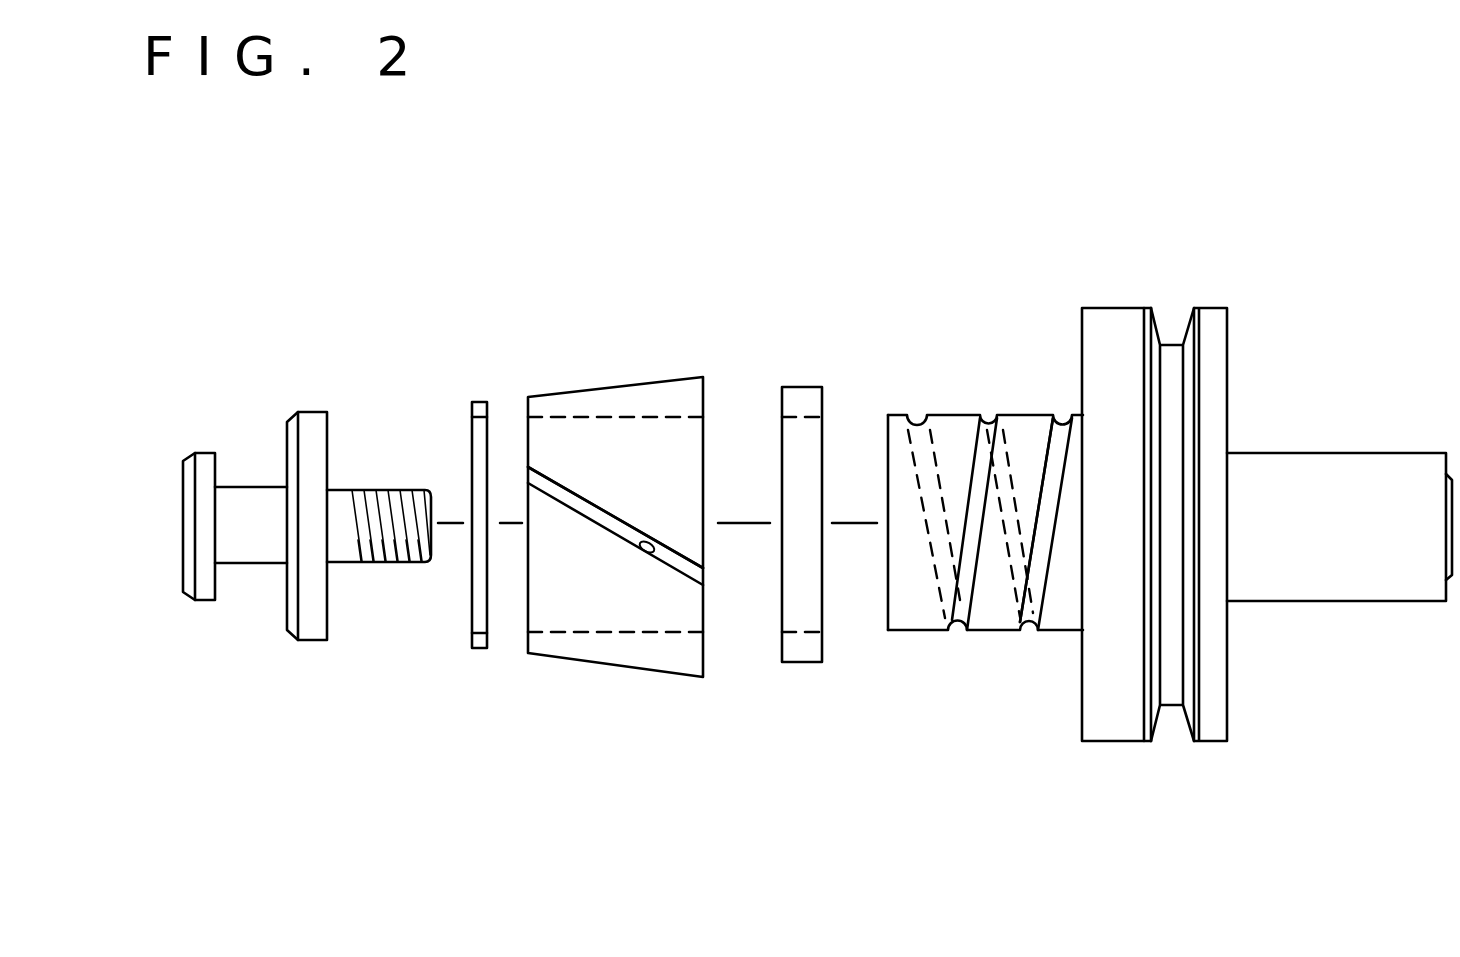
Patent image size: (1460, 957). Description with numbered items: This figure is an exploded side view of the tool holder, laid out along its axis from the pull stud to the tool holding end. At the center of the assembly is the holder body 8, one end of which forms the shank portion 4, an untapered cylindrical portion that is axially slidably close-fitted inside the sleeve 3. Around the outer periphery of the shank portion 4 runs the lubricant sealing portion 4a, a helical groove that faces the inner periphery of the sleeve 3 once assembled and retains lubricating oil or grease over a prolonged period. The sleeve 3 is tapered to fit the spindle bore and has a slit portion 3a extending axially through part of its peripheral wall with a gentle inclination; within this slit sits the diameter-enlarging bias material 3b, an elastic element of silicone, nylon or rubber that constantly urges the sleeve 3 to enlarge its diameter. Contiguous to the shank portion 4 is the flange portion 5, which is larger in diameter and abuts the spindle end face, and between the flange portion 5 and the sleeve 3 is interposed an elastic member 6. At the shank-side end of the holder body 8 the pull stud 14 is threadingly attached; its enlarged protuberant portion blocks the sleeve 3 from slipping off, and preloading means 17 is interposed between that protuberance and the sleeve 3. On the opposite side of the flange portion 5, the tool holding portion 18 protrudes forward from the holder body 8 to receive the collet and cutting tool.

The pull stud 14 is at (248, 472).
The preloading means 17 is at (475, 400).
The sleeve 3 is at (625, 546).
The slit portion 3a is at (648, 553).
The diameter-enlarging bias material 3b is at (603, 520).
The elastic member 6 is at (805, 385).
The shank portion 4 is at (985, 463).
The lubricant sealing portion 4a is at (1055, 453).
The flange portion 5 is at (1116, 308).
The holder body 8 is at (1271, 456).
The tool holding portion 18 is at (1402, 437).